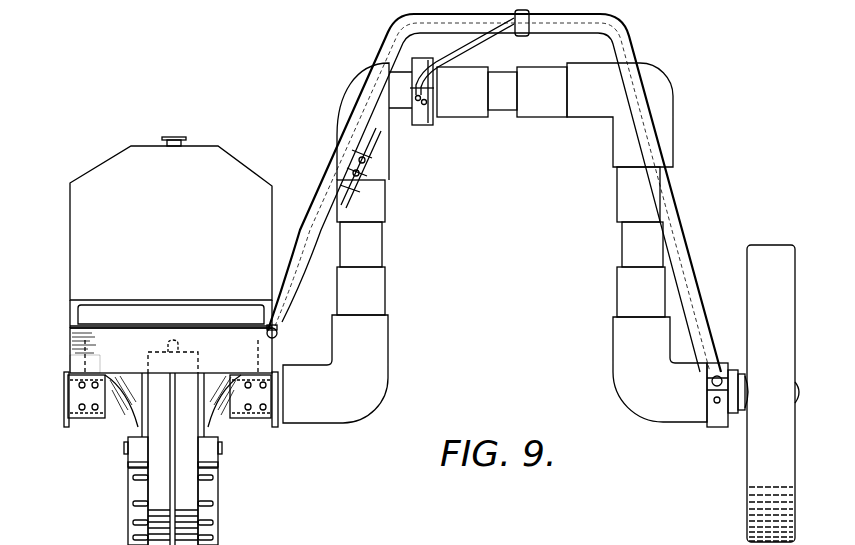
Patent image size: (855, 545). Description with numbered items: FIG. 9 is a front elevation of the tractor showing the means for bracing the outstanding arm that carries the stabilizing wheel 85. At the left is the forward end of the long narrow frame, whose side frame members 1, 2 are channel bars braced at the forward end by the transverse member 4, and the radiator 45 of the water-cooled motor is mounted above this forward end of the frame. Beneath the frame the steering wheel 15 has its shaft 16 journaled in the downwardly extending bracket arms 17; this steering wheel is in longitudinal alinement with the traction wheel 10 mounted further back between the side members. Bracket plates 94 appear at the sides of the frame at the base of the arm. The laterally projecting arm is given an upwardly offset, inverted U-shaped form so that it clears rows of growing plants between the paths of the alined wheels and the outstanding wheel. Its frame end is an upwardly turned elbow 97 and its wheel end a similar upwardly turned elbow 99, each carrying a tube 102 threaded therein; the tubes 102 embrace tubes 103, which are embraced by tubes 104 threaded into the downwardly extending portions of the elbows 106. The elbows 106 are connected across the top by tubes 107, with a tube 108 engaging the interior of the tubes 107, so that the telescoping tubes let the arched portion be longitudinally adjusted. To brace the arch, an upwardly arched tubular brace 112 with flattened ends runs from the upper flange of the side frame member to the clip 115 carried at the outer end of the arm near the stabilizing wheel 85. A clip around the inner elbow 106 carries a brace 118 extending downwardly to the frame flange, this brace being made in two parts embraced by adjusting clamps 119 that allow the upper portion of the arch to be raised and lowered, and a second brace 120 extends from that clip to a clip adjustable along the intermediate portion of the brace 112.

The side frame member 1 is at (77, 357).
The side frame member 2 is at (278, 337).
The transverse member 4 is at (171, 350).
The traction wheel 10 is at (133, 510).
The steering wheel 15 is at (192, 485).
The shaft 16 is at (225, 445).
The bracket arms 17 is at (137, 420).
The radiator 45 is at (171, 218).
The stabilizing wheel 85 is at (772, 248).
The bracket plate 94 is at (72, 403).
The elbow 97 is at (377, 377).
The elbow 99 is at (615, 357).
The tubes 102 is at (378, 291).
The tubes 103 is at (375, 245).
The tubes 104 is at (380, 195).
The elbows 106 is at (347, 97).
The tubes 107 is at (460, 107).
The tube 108 is at (500, 107).
The brace 112 is at (683, 248).
The clip 115 is at (715, 420).
The brace 118 is at (387, 132).
The adjusting clamps 119 is at (367, 180).
The second brace 120 is at (463, 57).